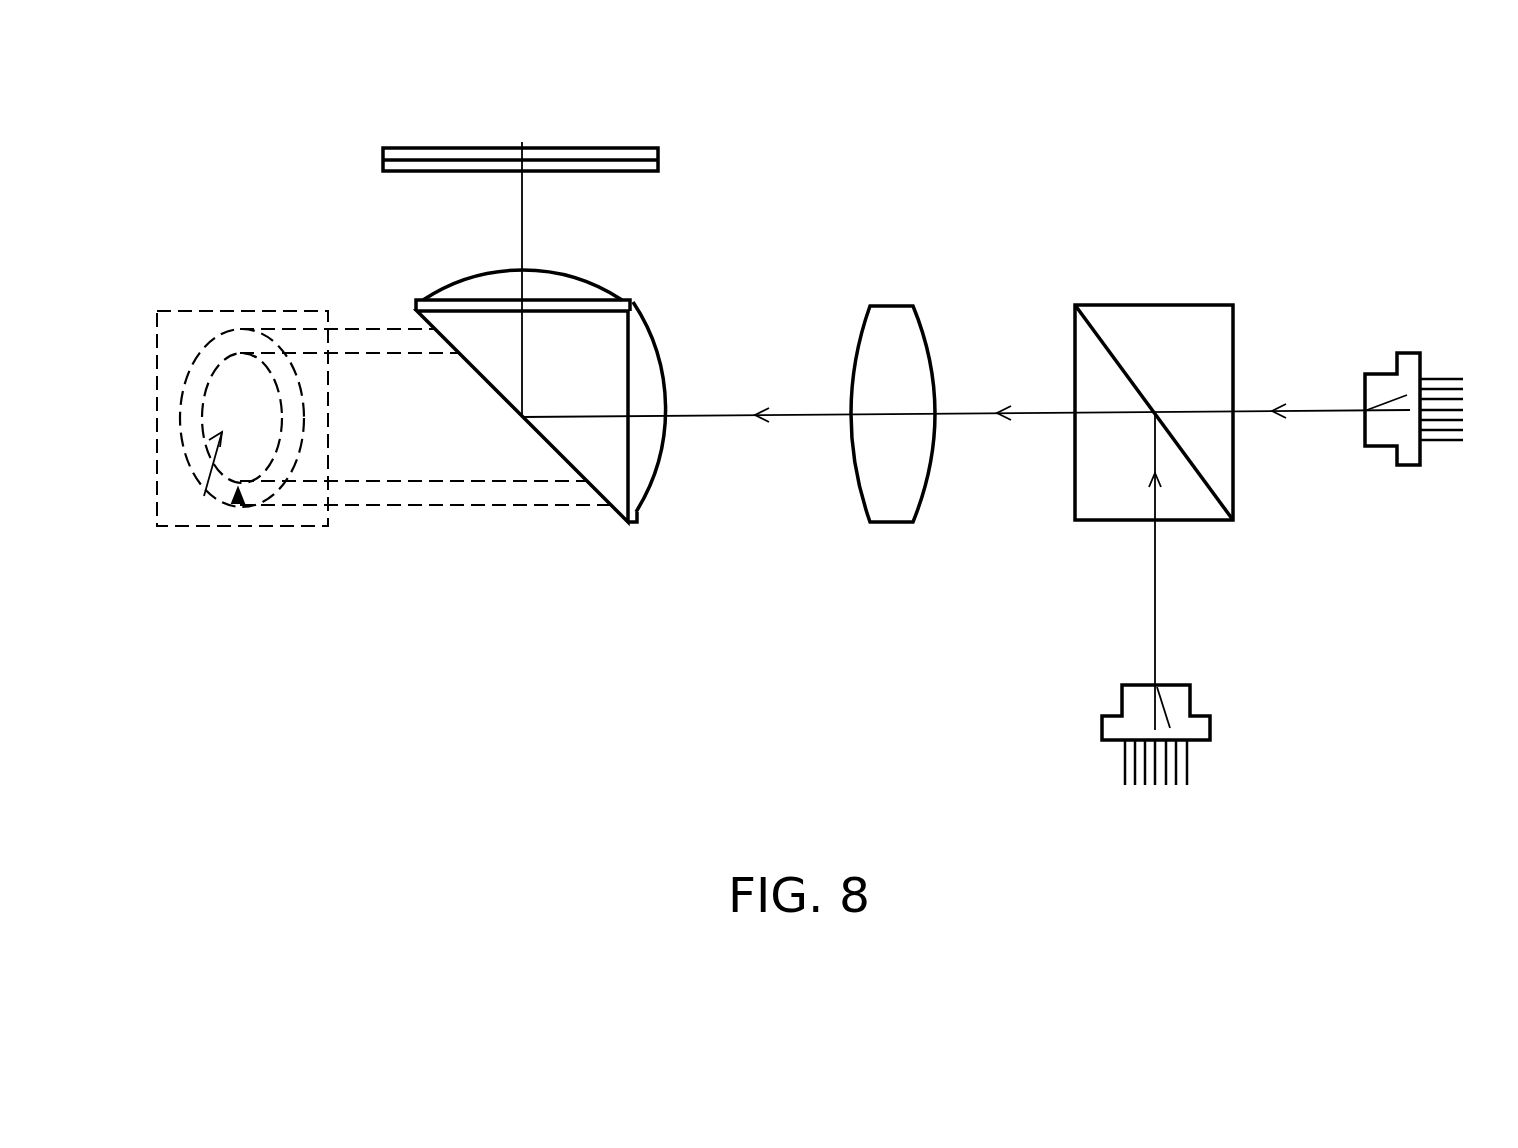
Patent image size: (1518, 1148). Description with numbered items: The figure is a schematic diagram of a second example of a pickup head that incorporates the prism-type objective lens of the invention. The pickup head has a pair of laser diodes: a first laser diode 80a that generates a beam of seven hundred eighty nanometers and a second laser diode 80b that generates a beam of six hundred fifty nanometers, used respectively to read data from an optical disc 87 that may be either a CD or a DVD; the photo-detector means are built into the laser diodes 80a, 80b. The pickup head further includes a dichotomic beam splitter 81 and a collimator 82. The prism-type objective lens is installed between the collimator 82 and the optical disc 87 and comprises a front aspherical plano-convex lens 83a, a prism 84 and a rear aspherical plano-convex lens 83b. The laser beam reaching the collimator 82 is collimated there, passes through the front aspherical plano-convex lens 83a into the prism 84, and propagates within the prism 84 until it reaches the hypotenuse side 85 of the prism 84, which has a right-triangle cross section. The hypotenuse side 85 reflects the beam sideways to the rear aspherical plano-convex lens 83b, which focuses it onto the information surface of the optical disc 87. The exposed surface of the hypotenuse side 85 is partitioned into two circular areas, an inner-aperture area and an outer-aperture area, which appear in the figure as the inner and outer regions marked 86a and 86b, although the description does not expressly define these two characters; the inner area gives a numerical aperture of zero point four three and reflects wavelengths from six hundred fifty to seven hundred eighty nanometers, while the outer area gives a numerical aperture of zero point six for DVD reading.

The first laser diode 80a is at (1178, 683).
The second laser diode 80b is at (1408, 353).
The dichotomic beam splitter 81 is at (1150, 305).
The collimator 82 is at (897, 302).
The front aspherical plano-convex lens 83a is at (662, 463).
The rear aspherical plano-convex lens 83b is at (573, 275).
The prism 84 is at (615, 482).
The hypotenuse side 85 is at (210, 311).
The inner track 86a is at (205, 498).
The outer track 86b is at (243, 503).
The optical disc 87 is at (660, 156).